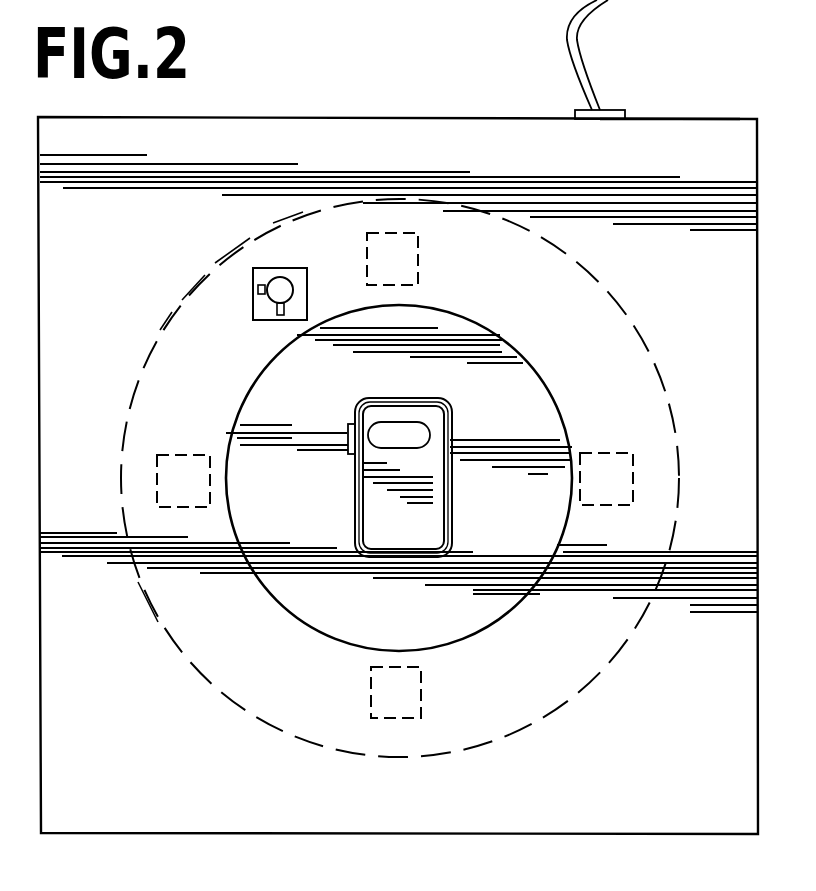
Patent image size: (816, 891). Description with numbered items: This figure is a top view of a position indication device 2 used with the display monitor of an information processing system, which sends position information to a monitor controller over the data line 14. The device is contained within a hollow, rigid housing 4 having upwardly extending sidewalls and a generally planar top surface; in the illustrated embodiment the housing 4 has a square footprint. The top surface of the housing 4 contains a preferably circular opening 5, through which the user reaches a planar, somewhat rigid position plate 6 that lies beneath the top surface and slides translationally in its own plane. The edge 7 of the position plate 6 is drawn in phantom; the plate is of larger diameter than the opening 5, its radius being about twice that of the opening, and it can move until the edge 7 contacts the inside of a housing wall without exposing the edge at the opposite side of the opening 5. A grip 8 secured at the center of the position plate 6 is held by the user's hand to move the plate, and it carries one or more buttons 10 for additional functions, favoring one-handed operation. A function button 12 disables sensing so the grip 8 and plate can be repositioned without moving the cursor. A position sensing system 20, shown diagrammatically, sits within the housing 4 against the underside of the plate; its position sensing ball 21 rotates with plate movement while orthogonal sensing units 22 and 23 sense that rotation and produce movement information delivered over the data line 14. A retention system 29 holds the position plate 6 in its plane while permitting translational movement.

The position indication device 2 is at (491, 114).
The housing 4 is at (675, 118).
The data line 14 is at (588, 77).
The edge 7 is at (680, 460).
The position plate 6 is at (533, 482).
The retention system 29 is at (393, 232).
The opening 5 is at (570, 493).
The buttons 10 is at (398, 461).
The grip 8 is at (420, 475).
The function button 12 is at (345, 432).
The position sensing system 20 is at (244, 261).
The position sensing ball 21 is at (280, 288).
The sensing unit 22 is at (285, 306).
The sensing unit 23 is at (260, 283).